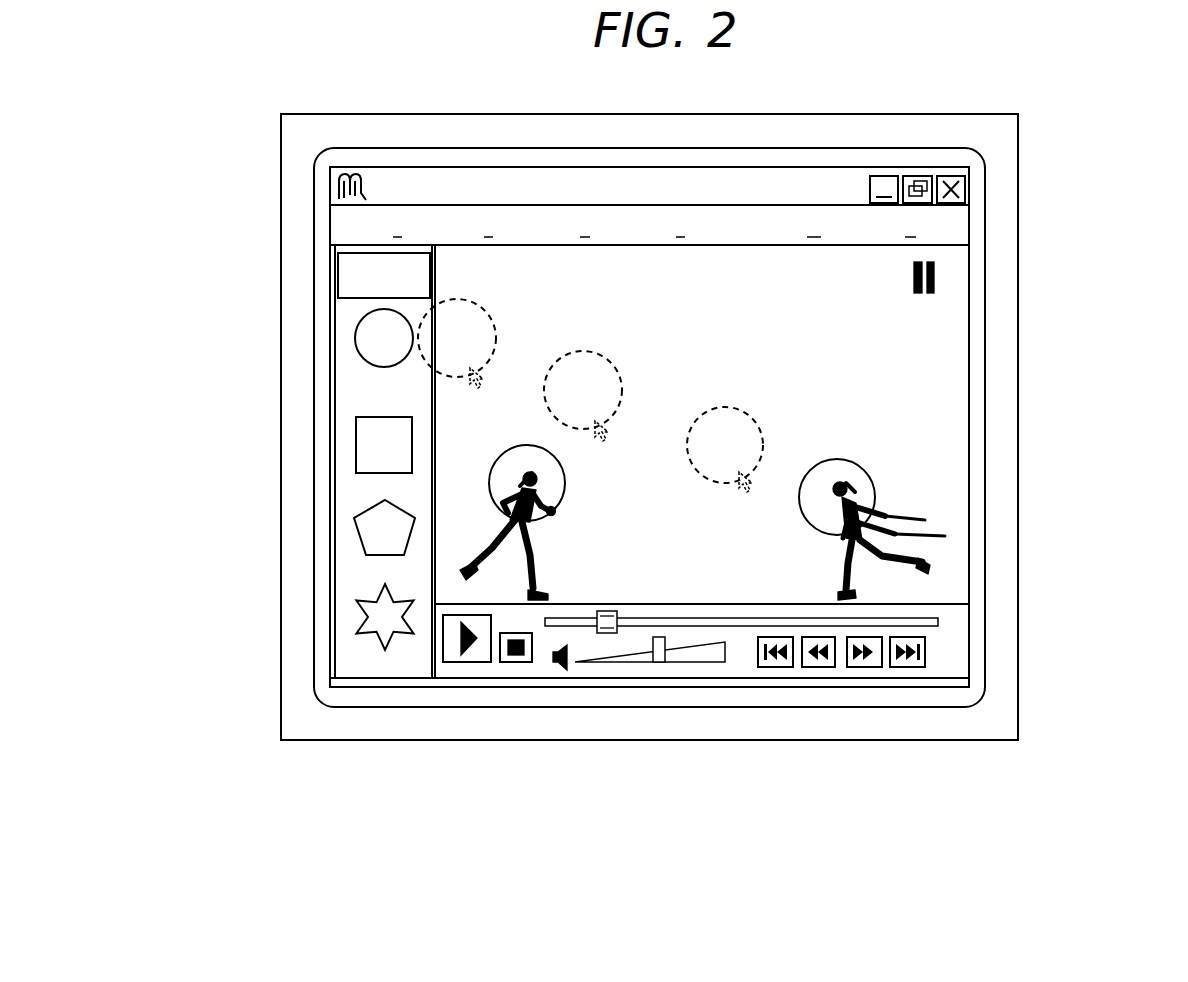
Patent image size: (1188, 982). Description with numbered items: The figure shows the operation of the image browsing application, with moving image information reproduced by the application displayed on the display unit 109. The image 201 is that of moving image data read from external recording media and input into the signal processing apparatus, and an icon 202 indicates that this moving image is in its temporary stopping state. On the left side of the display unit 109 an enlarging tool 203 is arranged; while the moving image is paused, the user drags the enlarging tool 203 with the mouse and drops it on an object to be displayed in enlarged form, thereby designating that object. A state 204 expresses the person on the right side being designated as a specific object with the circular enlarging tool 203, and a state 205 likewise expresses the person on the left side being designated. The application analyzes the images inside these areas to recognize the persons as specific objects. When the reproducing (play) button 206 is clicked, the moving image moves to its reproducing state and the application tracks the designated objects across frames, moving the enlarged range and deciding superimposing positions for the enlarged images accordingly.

The display unit 109 is at (848, 115).
The image 201 is at (935, 358).
The icon 202 is at (934, 275).
The enlarging tool 203 is at (343, 270).
The state 204 is at (863, 465).
The state 205 is at (494, 463).
The reproducing (play) button 206 is at (468, 662).